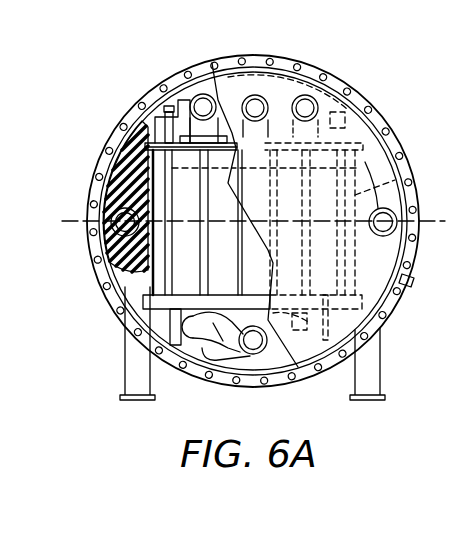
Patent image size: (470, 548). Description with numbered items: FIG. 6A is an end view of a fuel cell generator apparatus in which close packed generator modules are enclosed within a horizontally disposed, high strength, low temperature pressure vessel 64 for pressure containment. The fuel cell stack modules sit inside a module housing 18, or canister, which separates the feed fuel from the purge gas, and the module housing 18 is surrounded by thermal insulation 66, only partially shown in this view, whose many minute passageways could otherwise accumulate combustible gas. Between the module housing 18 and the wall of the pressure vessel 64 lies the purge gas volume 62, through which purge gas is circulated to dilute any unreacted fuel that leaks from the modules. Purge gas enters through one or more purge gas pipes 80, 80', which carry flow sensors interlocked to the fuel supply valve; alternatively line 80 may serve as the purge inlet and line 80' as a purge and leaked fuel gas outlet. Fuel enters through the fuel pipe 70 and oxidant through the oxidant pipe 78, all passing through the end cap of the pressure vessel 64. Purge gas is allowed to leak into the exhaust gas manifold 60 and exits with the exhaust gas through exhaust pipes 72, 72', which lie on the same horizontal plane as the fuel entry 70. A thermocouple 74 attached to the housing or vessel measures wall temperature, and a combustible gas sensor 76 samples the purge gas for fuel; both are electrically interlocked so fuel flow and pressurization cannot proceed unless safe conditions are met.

The module housing 18 is at (395, 180).
The exhaust gas manifold 60 is at (198, 93).
The purge gas volume 62 is at (127, 288).
The pressure vessel 64 is at (367, 92).
The thermal insulation 66 is at (130, 130).
The fuel pipe 70 is at (246, 95).
The exhaust pipe 72 is at (184, 96).
The exhaust pipe 72' is at (335, 90).
The thermocouple 74 is at (412, 281).
The combustible gas sensor 76 is at (103, 282).
The oxidant pipe 78 is at (205, 364).
The purge gas pipe 80 is at (112, 176).
The purge gas pipe 80' is at (412, 235).